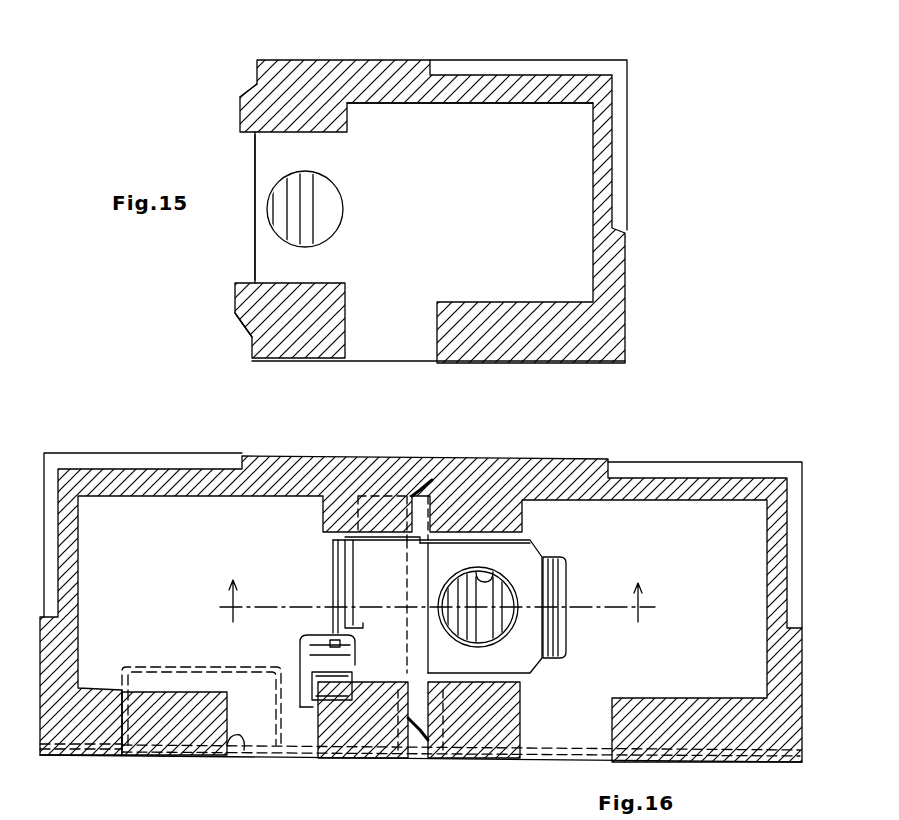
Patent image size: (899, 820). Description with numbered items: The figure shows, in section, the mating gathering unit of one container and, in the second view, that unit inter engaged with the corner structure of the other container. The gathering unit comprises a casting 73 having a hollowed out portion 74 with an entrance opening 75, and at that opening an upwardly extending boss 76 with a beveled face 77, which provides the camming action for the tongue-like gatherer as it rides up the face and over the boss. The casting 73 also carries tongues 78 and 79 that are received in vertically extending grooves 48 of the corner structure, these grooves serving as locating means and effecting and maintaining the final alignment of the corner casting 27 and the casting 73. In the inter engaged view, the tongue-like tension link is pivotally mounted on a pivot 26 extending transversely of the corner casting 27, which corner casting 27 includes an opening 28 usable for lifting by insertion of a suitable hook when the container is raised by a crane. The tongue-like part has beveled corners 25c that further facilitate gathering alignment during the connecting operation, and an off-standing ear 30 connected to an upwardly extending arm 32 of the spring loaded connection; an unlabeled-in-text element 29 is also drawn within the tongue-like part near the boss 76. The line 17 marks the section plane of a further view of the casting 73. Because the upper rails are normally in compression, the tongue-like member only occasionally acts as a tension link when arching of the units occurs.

In FIG. 15, the casting 73 is at (500, 61).
In FIG. 16, the casting 73 is at (590, 462).
In FIG. 15, the hollowed out portion 74 is at (472, 103).
In FIG. 15, the entrance opening 75 is at (257, 152).
In FIG. 15, the boss 76 is at (318, 213).
In FIG. 16, the boss 76 is at (512, 590).
In FIG. 15, the beveled face 77 is at (290, 185).
In FIG. 15, the tongue 78 is at (238, 322).
In FIG. 15, the tongue 79 is at (243, 102).
In FIG. 16, the pivot 26 is at (350, 578).
In FIG. 16, the beveled corners 25c is at (540, 560).
In FIG. 16, the aperture 29 is at (498, 576).
In FIG. 16, the off-standing ear 30 is at (298, 636).
In FIG. 16, the upwardly extending arm 32 is at (300, 683).
In FIG. 16, the corner casting 27 is at (157, 745).
In FIG. 16, the opening 28 is at (244, 750).
In FIG. 16, the vertically extending grooves 48 is at (416, 490).
In FIG. 16, the section line 17 is at (437, 587).